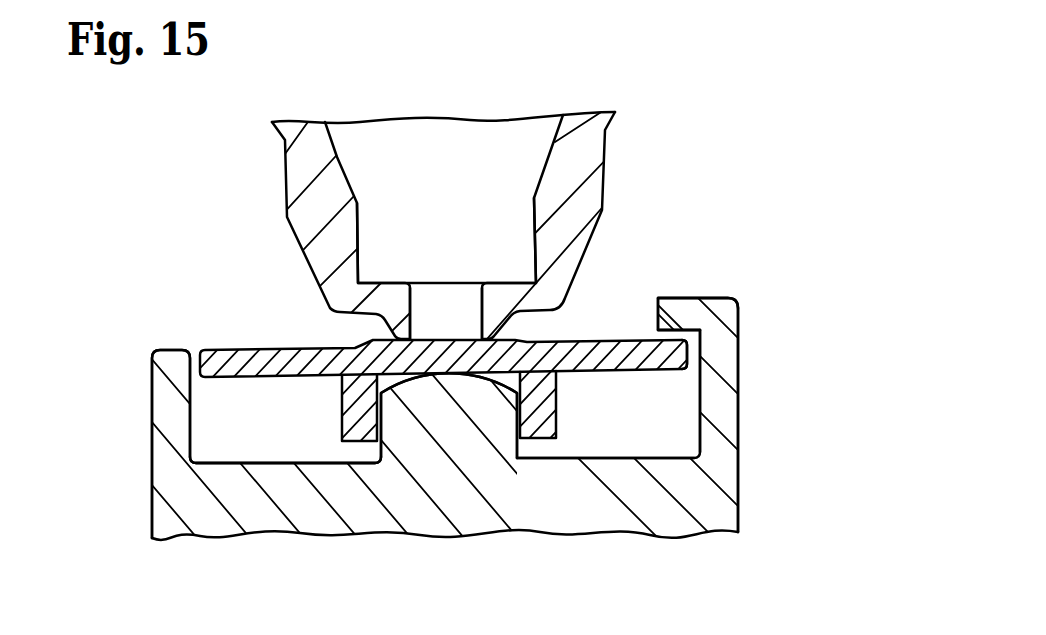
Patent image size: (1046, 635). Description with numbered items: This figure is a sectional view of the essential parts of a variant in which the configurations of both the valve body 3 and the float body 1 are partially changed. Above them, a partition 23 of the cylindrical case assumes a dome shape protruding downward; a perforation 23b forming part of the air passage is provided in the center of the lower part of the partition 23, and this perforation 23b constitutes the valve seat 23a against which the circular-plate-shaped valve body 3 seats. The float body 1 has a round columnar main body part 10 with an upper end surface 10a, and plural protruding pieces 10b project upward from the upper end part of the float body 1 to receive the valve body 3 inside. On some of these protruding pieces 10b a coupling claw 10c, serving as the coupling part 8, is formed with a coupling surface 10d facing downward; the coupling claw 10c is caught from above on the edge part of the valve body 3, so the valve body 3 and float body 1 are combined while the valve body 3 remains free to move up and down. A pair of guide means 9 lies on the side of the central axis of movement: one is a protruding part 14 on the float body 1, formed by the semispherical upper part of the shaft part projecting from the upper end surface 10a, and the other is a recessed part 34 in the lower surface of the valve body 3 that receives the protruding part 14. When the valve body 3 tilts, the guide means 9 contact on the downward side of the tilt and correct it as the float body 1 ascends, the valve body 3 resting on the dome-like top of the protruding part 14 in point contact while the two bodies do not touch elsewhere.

The float body 1 is at (682, 527).
The valve body 3 is at (592, 338).
The coupling part 8 is at (682, 327).
The guide means 9 is at (354, 462).
The main body part 10 is at (738, 518).
The upper end surface 10a is at (660, 454).
The protruding pieces 10b is at (165, 408).
The coupling claw 10c is at (665, 297).
The coupling surface 10d is at (690, 297).
The protruding part 14 is at (445, 395).
The partition 23 is at (286, 181).
The valve seat 23a is at (447, 335).
The perforation 23b is at (462, 297).
The recessed part 34 is at (383, 378).